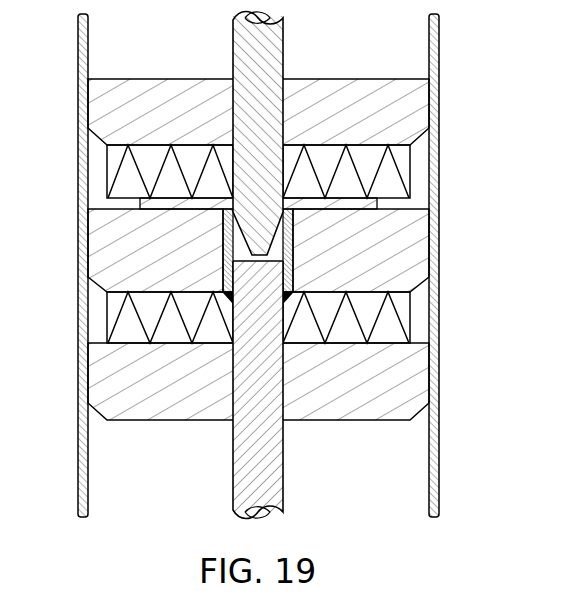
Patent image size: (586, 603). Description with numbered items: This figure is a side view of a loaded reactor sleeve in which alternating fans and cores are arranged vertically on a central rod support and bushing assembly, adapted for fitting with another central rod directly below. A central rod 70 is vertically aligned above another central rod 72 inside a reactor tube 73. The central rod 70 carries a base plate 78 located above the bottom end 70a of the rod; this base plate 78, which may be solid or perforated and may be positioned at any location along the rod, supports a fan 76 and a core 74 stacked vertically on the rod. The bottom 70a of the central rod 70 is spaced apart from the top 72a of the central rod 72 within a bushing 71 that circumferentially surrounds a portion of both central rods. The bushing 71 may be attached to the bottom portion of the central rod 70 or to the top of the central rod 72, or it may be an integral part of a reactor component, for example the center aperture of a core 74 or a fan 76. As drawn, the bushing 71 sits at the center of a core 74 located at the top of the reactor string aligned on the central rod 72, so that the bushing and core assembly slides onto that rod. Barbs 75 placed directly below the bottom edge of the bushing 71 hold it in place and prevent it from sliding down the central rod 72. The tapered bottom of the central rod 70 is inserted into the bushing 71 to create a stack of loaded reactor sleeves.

The central rod 70 is at (267, 138).
The bottom end of the central rod 70a is at (257, 256).
The bushing 71 is at (226, 246).
The central rod 72 is at (249, 388).
The top of the central rod 72a is at (237, 262).
The reactor tube 73 is at (437, 42).
The core 74 is at (423, 108).
The barbs 75 is at (228, 297).
The fan 76 is at (390, 182).
The base plate 78 is at (392, 206).